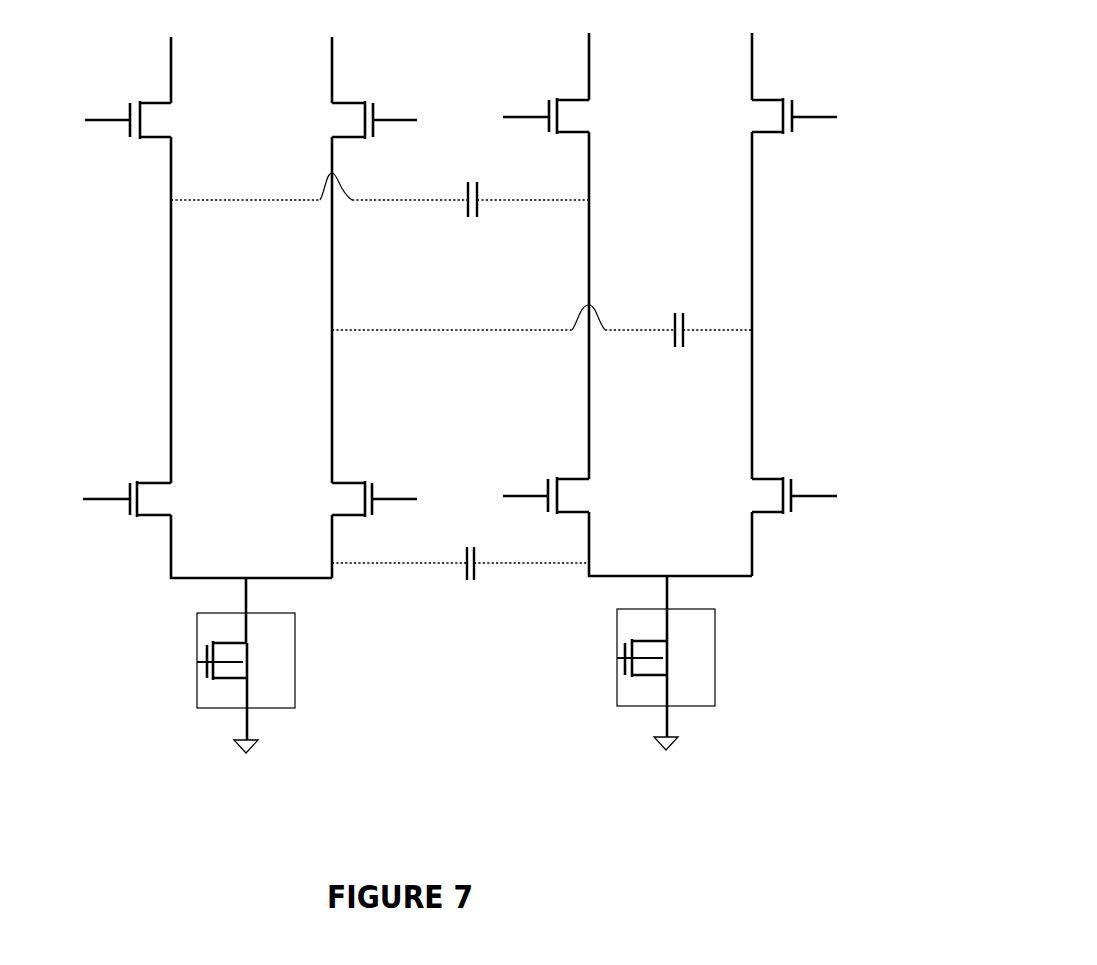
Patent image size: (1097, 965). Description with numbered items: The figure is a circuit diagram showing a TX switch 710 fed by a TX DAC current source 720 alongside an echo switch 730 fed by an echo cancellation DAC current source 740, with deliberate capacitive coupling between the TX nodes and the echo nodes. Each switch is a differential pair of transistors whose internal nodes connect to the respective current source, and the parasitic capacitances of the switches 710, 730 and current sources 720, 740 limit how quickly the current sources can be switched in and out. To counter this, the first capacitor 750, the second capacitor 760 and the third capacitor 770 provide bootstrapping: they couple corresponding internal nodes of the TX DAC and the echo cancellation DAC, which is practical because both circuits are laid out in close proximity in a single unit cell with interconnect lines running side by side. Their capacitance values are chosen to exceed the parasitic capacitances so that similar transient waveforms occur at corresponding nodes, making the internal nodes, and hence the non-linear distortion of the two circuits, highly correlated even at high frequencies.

The TX switch 710 is at (270, 507).
The TX DAC current source 720 is at (295, 671).
The echo switch 730 is at (683, 507).
The echo cancellation DAC current source 740 is at (708, 669).
The capacitor C1 750 is at (380, 223).
The capacitor C2 760 is at (460, 590).
The capacitor C3 770 is at (542, 353).